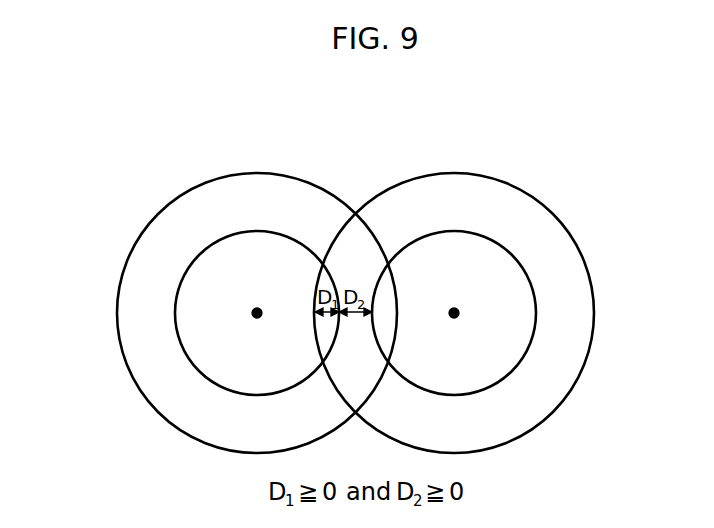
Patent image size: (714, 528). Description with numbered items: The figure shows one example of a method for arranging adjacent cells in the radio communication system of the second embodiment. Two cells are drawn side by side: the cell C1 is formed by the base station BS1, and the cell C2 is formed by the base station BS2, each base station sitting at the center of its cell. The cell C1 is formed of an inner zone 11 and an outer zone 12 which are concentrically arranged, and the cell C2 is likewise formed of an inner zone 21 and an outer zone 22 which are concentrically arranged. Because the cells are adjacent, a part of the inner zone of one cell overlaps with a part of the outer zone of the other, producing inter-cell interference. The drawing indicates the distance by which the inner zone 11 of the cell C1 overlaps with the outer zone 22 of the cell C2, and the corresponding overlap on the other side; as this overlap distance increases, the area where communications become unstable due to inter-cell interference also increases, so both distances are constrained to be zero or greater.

The inner zone 11 is at (197, 337).
The outer zone 12 is at (218, 427).
The inner zone 21 is at (498, 278).
The outer zone 22 is at (575, 323).
The base station BS1 is at (257, 313).
The base station BS2 is at (455, 316).
The cell C1 is at (257, 301).
The cell C2 is at (485, 272).